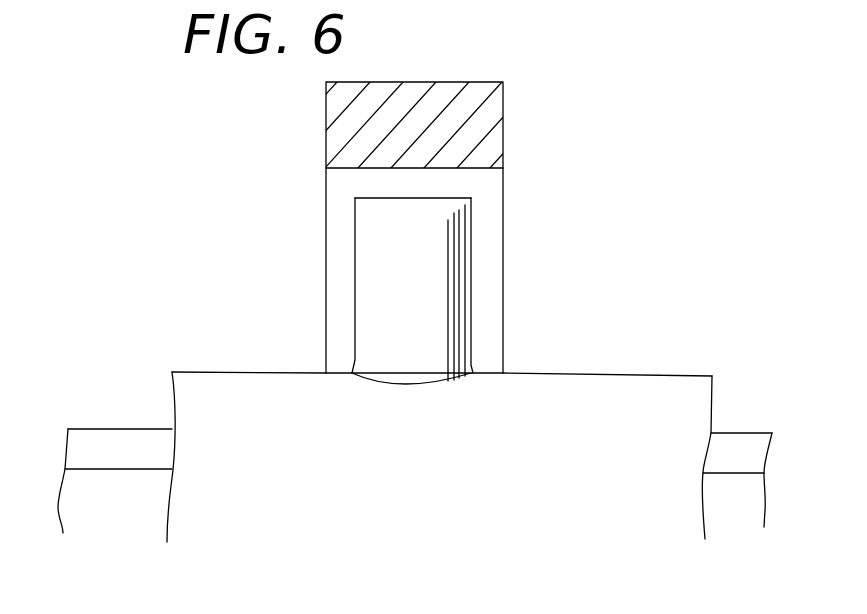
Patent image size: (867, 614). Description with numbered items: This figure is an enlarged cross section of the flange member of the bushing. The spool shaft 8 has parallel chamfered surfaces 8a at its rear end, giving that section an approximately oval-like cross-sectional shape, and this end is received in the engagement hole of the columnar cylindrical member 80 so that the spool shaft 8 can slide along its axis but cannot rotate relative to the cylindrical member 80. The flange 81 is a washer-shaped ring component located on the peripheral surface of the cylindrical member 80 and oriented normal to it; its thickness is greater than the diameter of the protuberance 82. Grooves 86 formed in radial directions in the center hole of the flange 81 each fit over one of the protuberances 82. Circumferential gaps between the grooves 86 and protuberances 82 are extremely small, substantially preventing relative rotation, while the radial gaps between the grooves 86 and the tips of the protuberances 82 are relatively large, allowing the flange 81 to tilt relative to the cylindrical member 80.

The spool shaft 8 is at (128, 448).
The chamfered surfaces 8a is at (740, 498).
The cylindrical member 80 is at (655, 373).
The flange 81 is at (505, 147).
The protuberance 82 is at (458, 300).
The grooves 86 is at (493, 226).